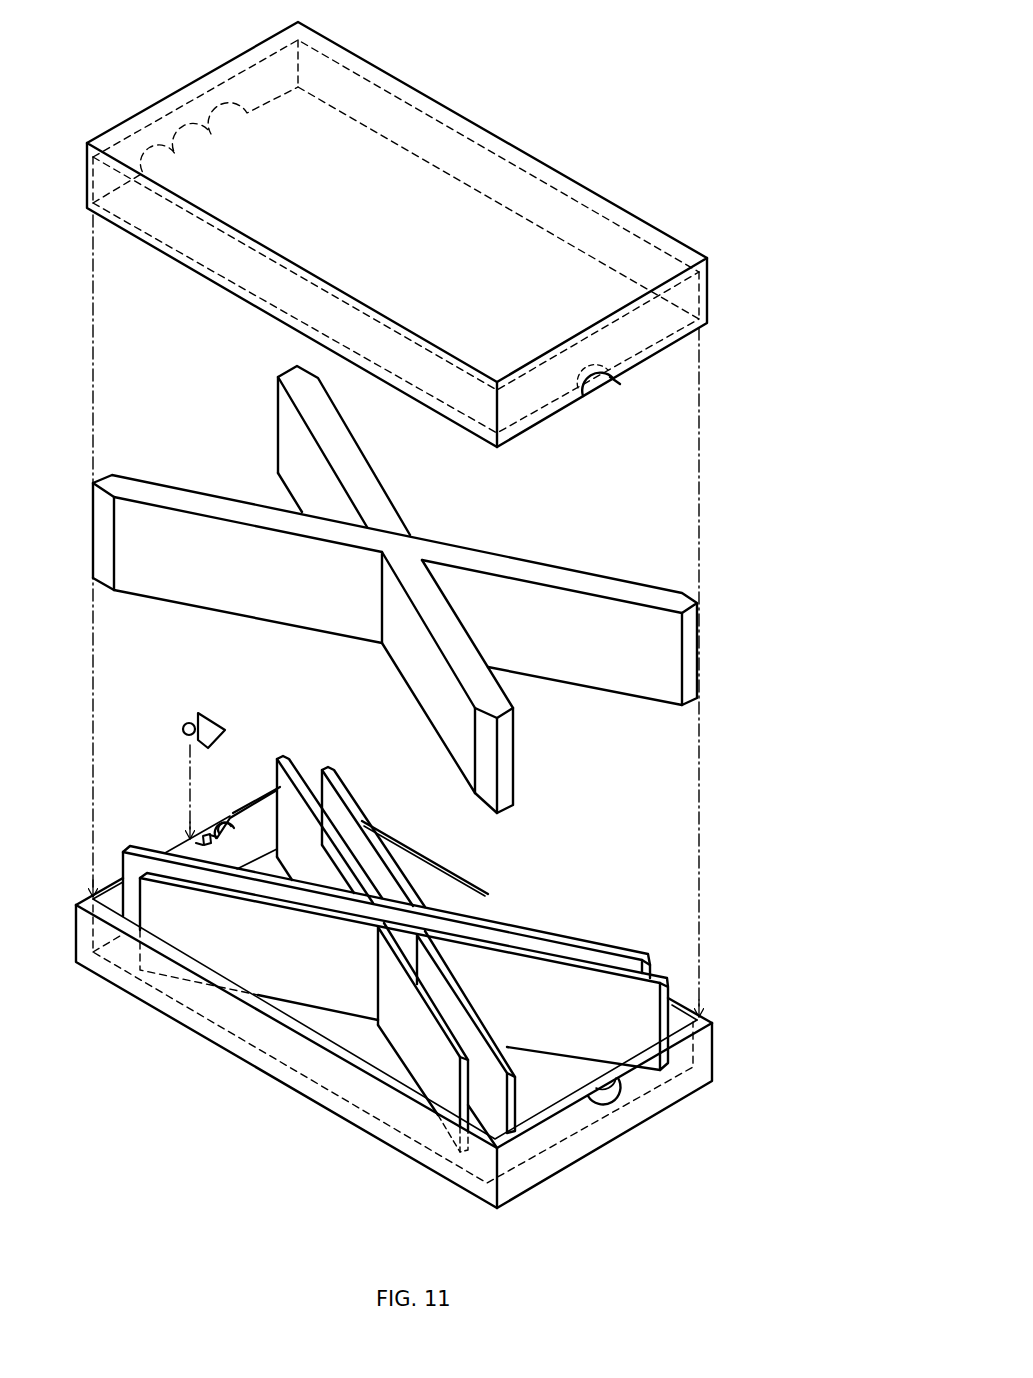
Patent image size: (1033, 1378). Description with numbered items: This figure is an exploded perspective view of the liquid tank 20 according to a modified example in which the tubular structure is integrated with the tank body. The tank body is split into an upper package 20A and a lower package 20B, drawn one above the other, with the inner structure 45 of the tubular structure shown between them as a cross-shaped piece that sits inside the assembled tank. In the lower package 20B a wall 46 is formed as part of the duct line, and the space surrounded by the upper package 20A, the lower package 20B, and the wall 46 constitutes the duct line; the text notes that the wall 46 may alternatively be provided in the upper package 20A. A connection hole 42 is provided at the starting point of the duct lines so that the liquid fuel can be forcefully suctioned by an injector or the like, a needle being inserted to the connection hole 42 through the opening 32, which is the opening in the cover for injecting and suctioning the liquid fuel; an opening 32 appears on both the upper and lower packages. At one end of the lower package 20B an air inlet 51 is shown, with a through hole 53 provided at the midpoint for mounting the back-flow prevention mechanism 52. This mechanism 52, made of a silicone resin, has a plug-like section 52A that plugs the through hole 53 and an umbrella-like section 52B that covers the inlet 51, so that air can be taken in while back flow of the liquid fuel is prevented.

The liquid tank 20 is at (624, 42).
The upper package 20A is at (512, 152).
The lower package 20B is at (706, 1056).
The opening 32 is at (606, 384).
The connection hole 42 is at (473, 922).
The inner structure 45 is at (512, 560).
The wall 46 is at (477, 938).
The air inlet 51 is at (230, 822).
The back-flow prevention mechanism 52 is at (253, 698).
The plug-like section 52A is at (200, 716).
The umbrella-like section 52B is at (226, 729).
The through hole 53 is at (184, 842).